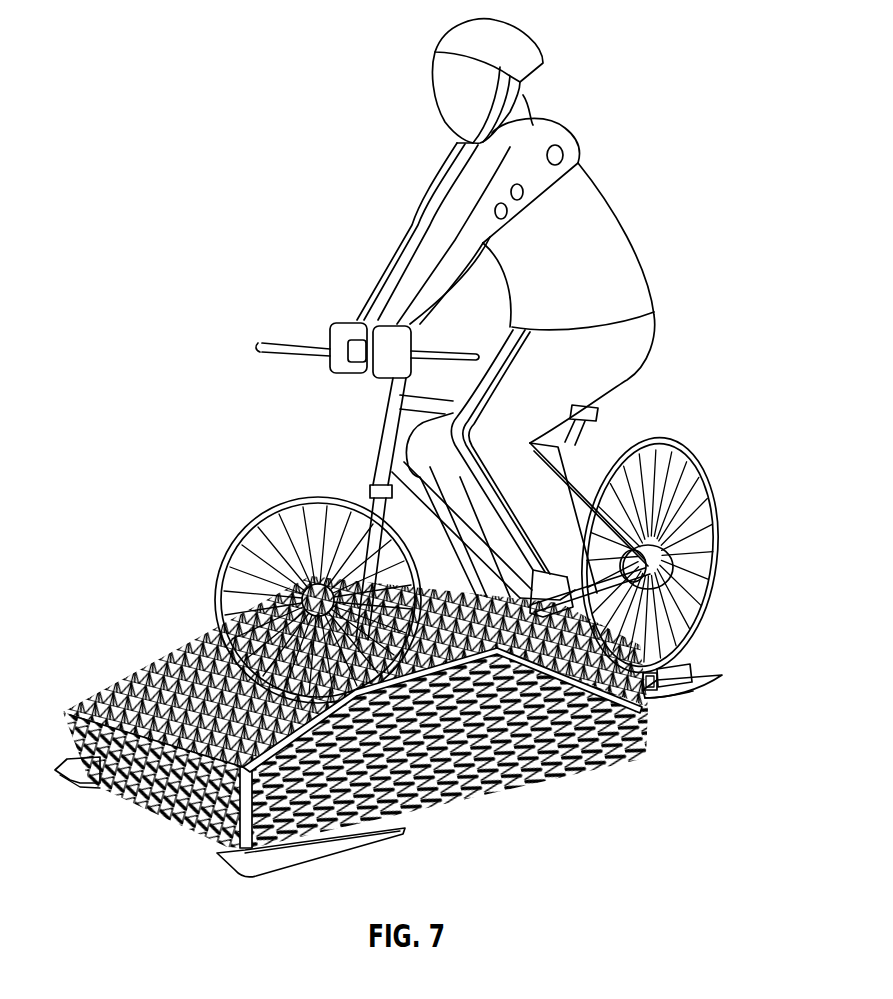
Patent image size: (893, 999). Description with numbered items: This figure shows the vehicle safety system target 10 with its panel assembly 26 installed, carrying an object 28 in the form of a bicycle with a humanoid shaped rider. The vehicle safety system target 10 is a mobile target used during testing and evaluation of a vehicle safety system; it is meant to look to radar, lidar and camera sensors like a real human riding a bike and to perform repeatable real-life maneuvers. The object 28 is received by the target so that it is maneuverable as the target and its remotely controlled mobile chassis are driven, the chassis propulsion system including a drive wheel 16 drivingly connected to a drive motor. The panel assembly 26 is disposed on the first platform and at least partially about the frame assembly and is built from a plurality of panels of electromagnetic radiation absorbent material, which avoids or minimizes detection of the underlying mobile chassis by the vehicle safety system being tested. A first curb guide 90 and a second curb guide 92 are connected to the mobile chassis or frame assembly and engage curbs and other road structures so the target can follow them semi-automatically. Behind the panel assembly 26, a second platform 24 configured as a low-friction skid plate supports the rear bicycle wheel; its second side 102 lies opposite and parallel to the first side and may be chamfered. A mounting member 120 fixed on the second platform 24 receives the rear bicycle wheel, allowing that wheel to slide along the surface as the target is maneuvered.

The vehicle safety system target 10 is at (395, 644).
The drive wheel 16 is at (355, 721).
The second platform 24 is at (708, 687).
The panel assembly 26 is at (167, 828).
The object 28 is at (317, 491).
The first curb guide 90 is at (70, 762).
The second curb guide 92 is at (350, 855).
The second side 102 is at (668, 705).
The mounting member 120 is at (697, 670).